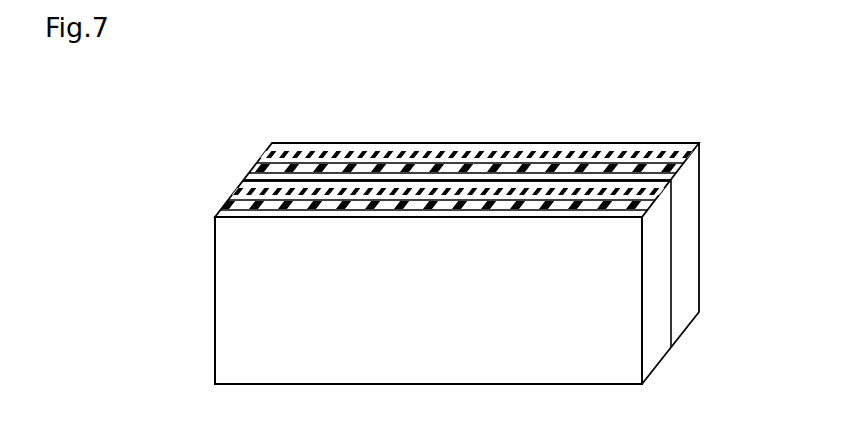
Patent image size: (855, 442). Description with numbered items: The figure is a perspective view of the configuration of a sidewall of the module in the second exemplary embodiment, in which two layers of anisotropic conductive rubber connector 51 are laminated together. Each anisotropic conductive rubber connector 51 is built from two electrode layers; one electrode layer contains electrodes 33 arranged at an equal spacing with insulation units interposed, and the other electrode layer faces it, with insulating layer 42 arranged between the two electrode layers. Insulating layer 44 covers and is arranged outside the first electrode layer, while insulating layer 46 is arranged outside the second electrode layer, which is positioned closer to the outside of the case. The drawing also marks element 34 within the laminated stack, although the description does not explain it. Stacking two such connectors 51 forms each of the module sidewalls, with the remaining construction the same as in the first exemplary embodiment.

The anisotropic conductive rubber connector 51 is at (525, 377).
The insulating layer 44 is at (293, 148).
The electrodes 33 is at (370, 155).
The second internal electrode layer 34 is at (410, 172).
The insulating layer 42 is at (528, 162).
The insulating layer 46 is at (595, 178).